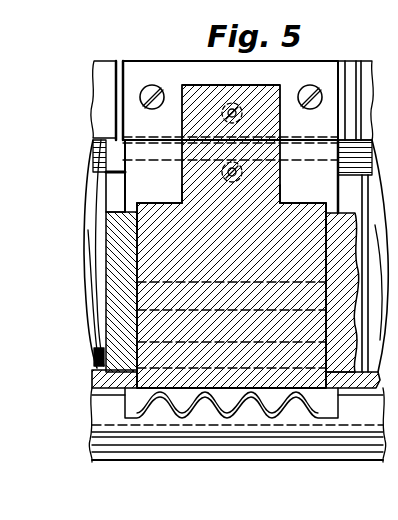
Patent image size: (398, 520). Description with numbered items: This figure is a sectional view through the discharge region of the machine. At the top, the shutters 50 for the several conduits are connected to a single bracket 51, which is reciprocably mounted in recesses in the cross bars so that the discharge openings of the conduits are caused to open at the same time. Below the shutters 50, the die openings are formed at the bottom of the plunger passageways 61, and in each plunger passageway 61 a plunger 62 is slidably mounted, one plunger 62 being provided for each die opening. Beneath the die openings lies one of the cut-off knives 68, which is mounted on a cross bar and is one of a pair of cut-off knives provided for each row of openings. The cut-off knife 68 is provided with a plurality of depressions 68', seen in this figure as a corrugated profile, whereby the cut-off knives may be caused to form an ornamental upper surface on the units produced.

The shutter 50 is at (300, 65).
The bracket 51 is at (356, 70).
The plunger passageway 61 is at (325, 228).
The plunger 62 is at (188, 222).
The cut-off knife 68 is at (237, 444).
The depressions 68' is at (231, 439).